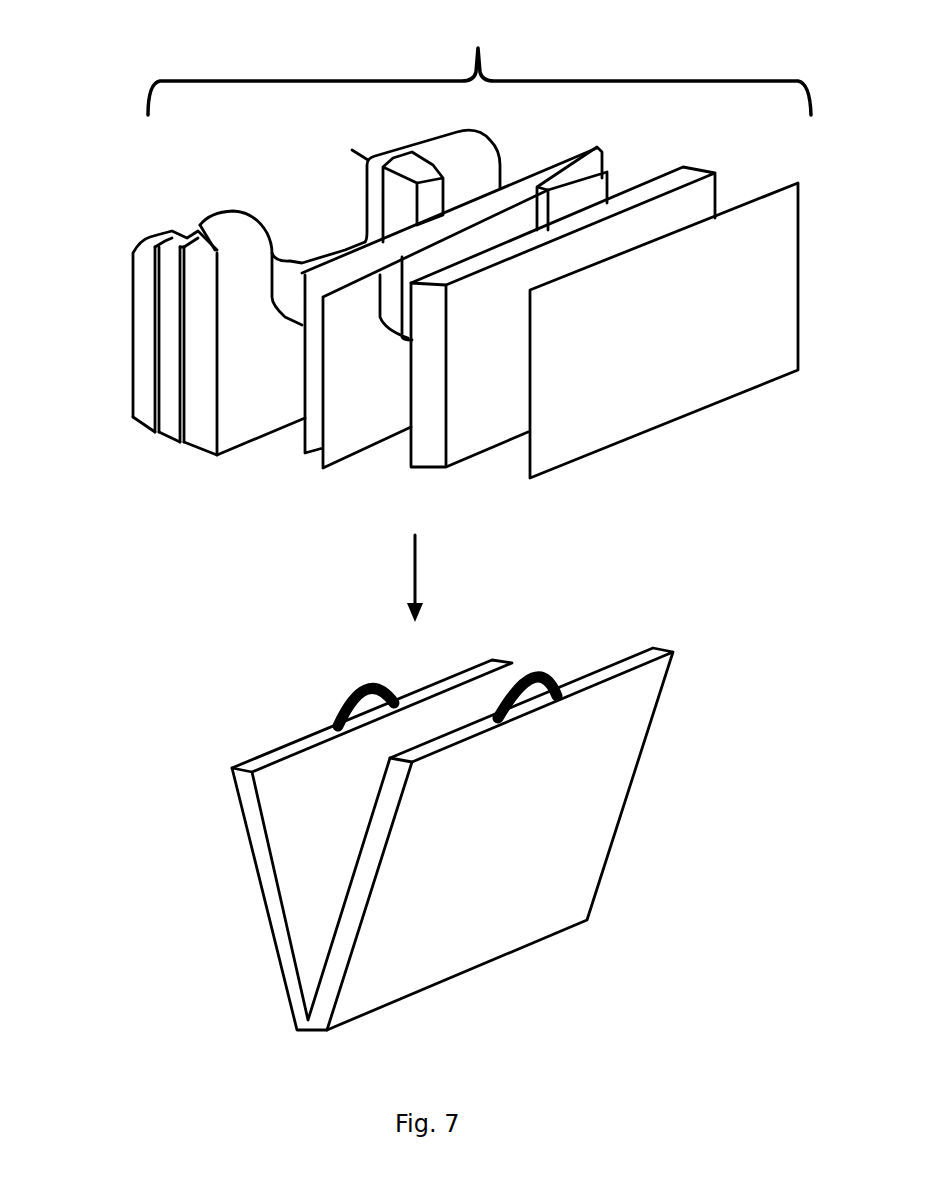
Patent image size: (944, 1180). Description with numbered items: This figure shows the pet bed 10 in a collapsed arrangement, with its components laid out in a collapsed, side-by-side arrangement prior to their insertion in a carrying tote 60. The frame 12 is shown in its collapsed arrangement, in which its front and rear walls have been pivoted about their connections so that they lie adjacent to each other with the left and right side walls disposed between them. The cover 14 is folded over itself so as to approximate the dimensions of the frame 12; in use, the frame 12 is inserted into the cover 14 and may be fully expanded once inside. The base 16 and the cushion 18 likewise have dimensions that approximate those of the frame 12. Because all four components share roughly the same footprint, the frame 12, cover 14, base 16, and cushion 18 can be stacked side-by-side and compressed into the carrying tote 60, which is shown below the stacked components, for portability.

The pet bed 10 is at (479, 63).
The frame 12 is at (312, 457).
The cover 14 is at (160, 233).
The base 16 is at (690, 413).
The cushion 18 is at (432, 468).
The carrying tote 60 is at (438, 988).